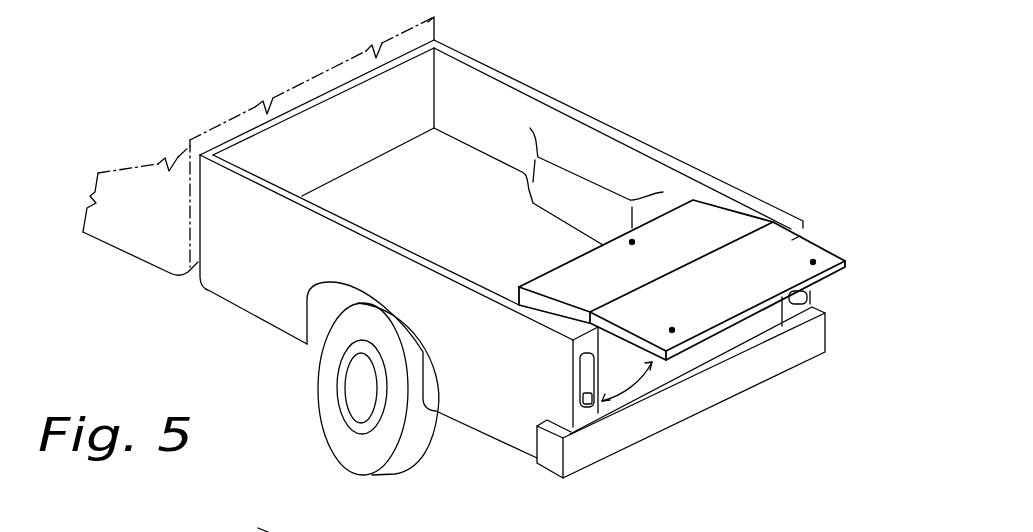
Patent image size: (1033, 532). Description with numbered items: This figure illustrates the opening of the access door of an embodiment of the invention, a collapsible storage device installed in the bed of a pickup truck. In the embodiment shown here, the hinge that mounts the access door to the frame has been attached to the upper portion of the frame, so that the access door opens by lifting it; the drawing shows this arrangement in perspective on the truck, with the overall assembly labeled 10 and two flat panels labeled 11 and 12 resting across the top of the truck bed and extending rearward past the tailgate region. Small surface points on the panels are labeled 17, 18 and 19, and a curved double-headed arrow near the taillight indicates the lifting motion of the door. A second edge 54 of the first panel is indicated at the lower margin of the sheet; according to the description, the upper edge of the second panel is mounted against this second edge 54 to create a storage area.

The pickup truck 10 is at (818, 123).
The first panel 11 is at (771, 286).
The second panel 12 is at (605, 298).
The panel edge 17 is at (795, 238).
The panel upper surface 18 is at (816, 260).
The panel upper surface 19 is at (632, 242).
The second edge 54 is at (263, 524).